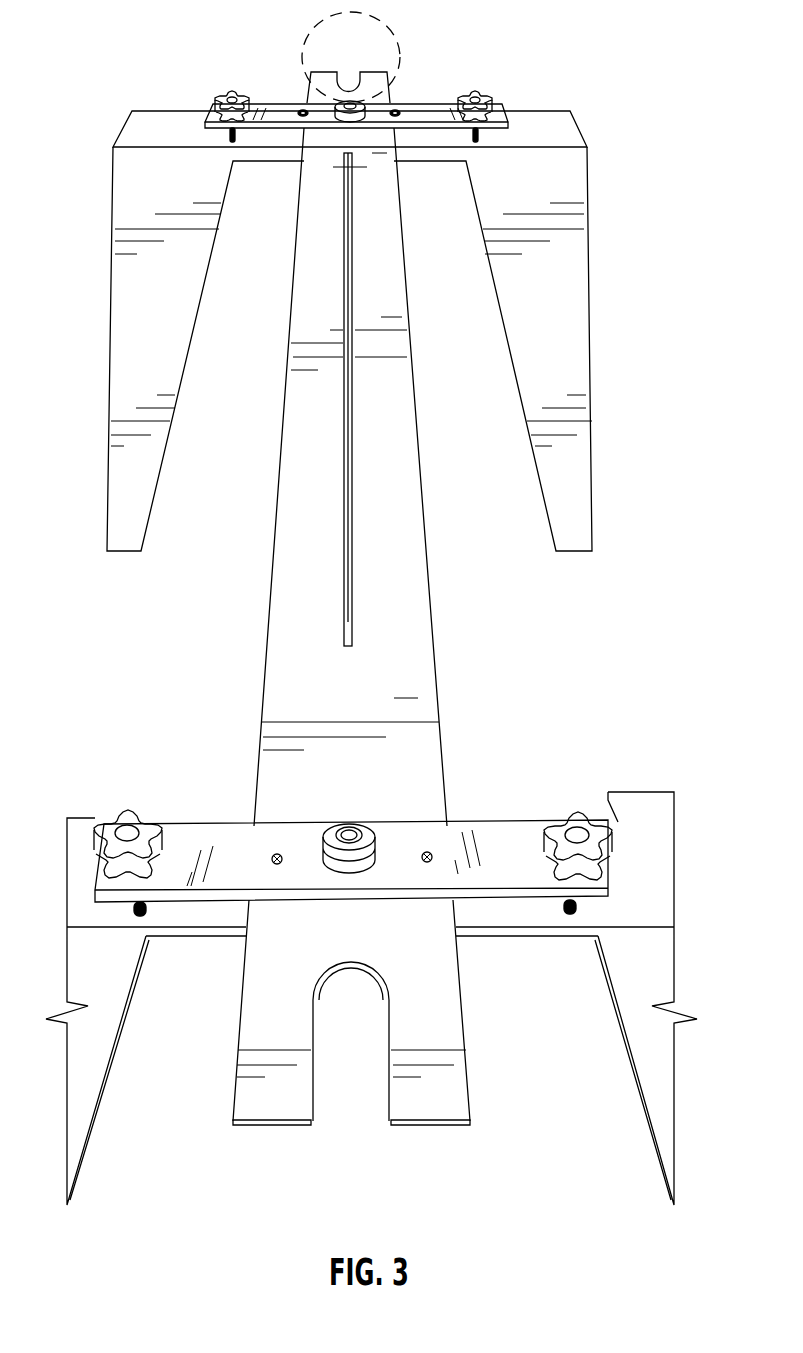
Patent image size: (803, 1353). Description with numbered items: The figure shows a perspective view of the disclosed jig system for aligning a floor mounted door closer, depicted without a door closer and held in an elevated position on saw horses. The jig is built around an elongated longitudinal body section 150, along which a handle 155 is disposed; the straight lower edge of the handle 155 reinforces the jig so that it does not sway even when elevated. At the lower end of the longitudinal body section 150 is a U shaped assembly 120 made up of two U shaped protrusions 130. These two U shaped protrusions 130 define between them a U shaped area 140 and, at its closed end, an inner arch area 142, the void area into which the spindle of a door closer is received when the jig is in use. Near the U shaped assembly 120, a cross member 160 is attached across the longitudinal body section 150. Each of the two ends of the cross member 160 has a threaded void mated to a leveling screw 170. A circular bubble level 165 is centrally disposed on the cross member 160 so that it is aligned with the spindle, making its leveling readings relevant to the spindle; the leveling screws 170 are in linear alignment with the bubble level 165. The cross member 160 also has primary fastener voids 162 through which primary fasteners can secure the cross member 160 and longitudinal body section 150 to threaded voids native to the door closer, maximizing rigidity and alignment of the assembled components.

The U shaped assembly 120 is at (322, 30).
The U shaped protrusions 130 is at (243, 1105).
The U shaped area 140 is at (359, 1109).
The inner arch area 142 is at (344, 967).
The longitudinal body section 150 is at (427, 628).
The handle 155 is at (356, 520).
The cross member 160 is at (185, 834).
The primary fastener voids 162 is at (425, 851).
The circular bubble level 165 is at (333, 834).
The leveling screws 170 is at (122, 817).